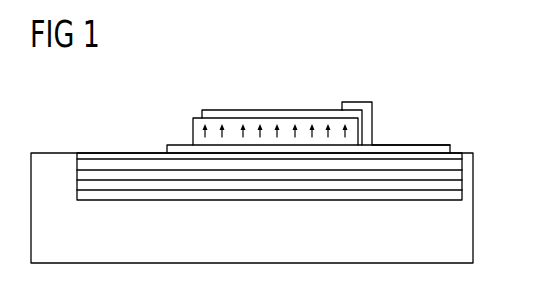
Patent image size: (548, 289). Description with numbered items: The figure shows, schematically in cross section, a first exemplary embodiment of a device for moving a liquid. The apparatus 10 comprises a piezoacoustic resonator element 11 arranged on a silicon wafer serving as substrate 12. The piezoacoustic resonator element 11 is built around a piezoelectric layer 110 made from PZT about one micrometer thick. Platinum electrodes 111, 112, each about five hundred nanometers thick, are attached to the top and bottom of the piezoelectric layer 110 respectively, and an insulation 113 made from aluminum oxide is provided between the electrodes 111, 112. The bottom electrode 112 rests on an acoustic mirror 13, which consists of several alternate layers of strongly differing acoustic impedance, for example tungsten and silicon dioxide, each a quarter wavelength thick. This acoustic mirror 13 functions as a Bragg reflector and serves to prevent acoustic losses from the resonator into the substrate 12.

The apparatus 10 is at (437, 70).
The piezoacoustic resonator element 11 is at (268, 96).
The substrate 12 is at (466, 228).
The acoustic mirror 13 is at (481, 149).
The piezoelectric layer 110 is at (287, 128).
The top electrode 111 is at (327, 108).
The bottom electrode 112 is at (180, 147).
The insulation 113 is at (360, 137).